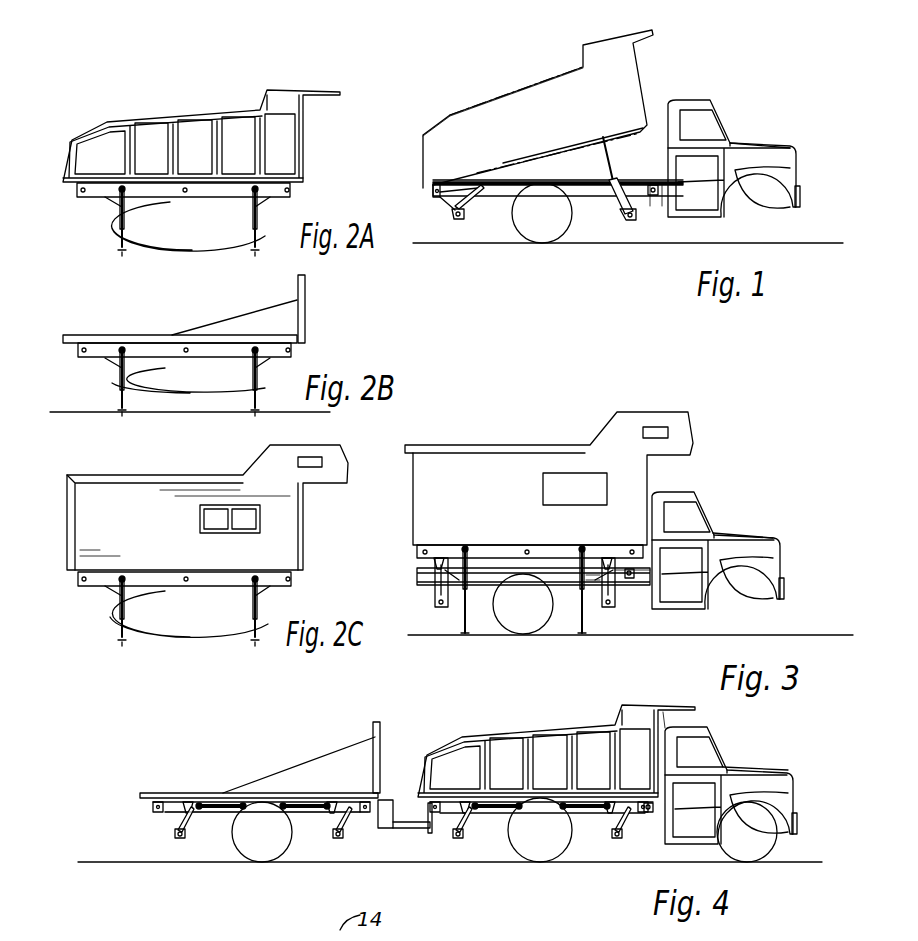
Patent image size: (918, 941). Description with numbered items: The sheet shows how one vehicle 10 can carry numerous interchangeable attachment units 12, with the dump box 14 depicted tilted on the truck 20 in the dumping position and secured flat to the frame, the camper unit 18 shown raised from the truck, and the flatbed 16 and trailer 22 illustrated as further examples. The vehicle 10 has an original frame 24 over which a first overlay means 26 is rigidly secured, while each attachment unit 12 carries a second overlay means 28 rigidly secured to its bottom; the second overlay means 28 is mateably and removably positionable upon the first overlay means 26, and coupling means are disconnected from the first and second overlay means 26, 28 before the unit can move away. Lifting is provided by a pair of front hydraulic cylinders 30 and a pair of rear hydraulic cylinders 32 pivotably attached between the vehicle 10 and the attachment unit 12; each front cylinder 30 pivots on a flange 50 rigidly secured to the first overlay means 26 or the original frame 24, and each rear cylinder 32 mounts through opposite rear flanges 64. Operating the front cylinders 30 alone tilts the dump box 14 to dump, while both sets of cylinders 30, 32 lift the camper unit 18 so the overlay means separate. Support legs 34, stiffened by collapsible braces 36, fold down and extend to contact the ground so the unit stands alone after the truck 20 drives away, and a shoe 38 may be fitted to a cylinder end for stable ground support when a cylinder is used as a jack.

In FIG. 1, the vehicle 10 is at (715, 90).
In FIG. 3, the vehicle 10 is at (700, 490).
In FIG. 4, the vehicle 10 is at (727, 736).
In FIG. 1, the attachment unit 12 is at (640, 57).
In FIG. 3, the attachment unit 12 is at (695, 418).
In FIG. 4, the attachment unit 12 is at (705, 707).
In FIG. 1, the dump box 14 is at (540, 84).
In FIG. 2A, the dump box 14 is at (320, 90).
In FIG. 4, the dump box 14 is at (688, 705).
In FIG. 2B, the flatbed 16 is at (306, 303).
In FIG. 4, the flatbed 16 is at (343, 762).
In FIG. 2C, the camper unit 18 is at (303, 512).
In FIG. 3, the camper unit 18 is at (473, 443).
In FIG. 1, the truck 20 is at (749, 135).
In FIG. 3, the truck 20 is at (740, 528).
In FIG. 4, the truck 20 is at (790, 767).
In FIG. 4, the trailer 22 is at (132, 813).
In FIG. 1, the original frame 24 is at (660, 192).
In FIG. 3, the original frame 24 is at (642, 585).
In FIG. 4, the original frame 24 is at (652, 814).
In FIG. 1, the first overlay means 26 is at (462, 180).
In FIG. 3, the first overlay means 26 is at (420, 575).
In FIG. 1, the second overlay means 28 is at (510, 166).
In FIG. 2A, the second overlay means 28 is at (278, 185).
In FIG. 2B, the second overlay means 28 is at (290, 341).
In FIG. 2C, the second overlay means 28 is at (284, 576).
In FIG. 3, the second overlay means 28 is at (428, 548).
In FIG. 4, the second overlay means 28 is at (452, 800).
In FIG. 1, the front hydraulic cylinder 30 is at (622, 218).
In FIG. 3, the front hydraulic cylinder 30 is at (614, 608).
In FIG. 4, the front hydraulic cylinder 30 is at (337, 836).
In FIG. 1, the rear hydraulic cylinder 32 is at (466, 225).
In FIG. 3, the rear hydraulic cylinder 32 is at (442, 610).
In FIG. 4, the rear hydraulic cylinder 32 is at (185, 836).
In FIG. 2A, the support legs 34 is at (252, 222).
In FIG. 2B, the support legs 34 is at (252, 380).
In FIG. 2C, the support legs 34 is at (252, 610).
In FIG. 3, the support legs 34 is at (467, 633).
In FIG. 4, the support legs 34 is at (310, 803).
In FIG. 2A, the collapsible braces 36 is at (255, 246).
In FIG. 2B, the collapsible braces 36 is at (255, 400).
In FIG. 2C, the collapsible braces 36 is at (255, 636).
In FIG. 3, the collapsible braces 36 is at (580, 545).
In FIG. 2A, the shoe 38 is at (122, 250).
In FIG. 2B, the shoe 38 is at (122, 412).
In FIG. 2C, the shoe 38 is at (122, 640).
In FIG. 3, the shoe 38 is at (465, 635).
In FIG. 1, the flange 50 is at (452, 208).
In FIG. 3, the flange 50 is at (436, 598).
In FIG. 4, the flange 50 is at (195, 836).
In FIG. 1, the rear flange 64 is at (640, 222).
In FIG. 3, the rear flange 64 is at (593, 590).
In FIG. 4, the rear flange 64 is at (348, 830).